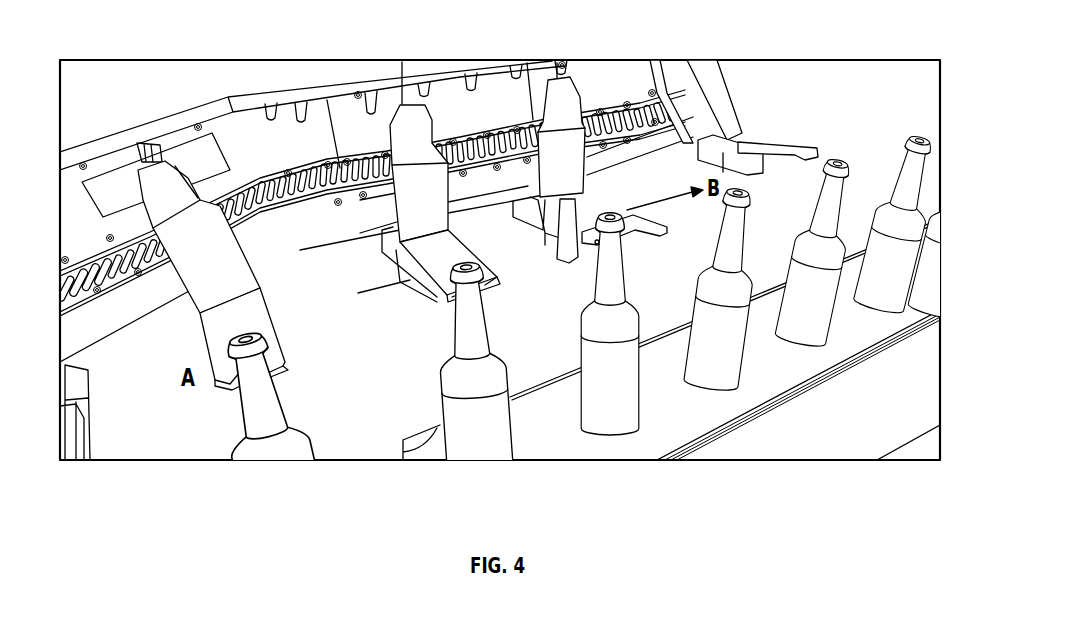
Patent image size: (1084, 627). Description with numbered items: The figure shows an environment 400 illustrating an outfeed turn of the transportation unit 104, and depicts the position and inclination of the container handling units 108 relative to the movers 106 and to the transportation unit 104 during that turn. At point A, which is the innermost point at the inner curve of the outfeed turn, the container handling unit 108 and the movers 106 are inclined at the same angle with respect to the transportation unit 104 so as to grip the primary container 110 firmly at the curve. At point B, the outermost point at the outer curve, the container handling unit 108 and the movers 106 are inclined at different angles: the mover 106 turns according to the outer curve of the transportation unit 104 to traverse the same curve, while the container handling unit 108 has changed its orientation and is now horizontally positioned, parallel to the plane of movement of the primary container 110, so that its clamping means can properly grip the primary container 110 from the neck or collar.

The environment 400 is at (97, 22).
The transportation unit 104 is at (100, 327).
The mover 106 is at (233, 248).
The container handling unit 108 is at (272, 334).
The primary container 110 is at (500, 424).